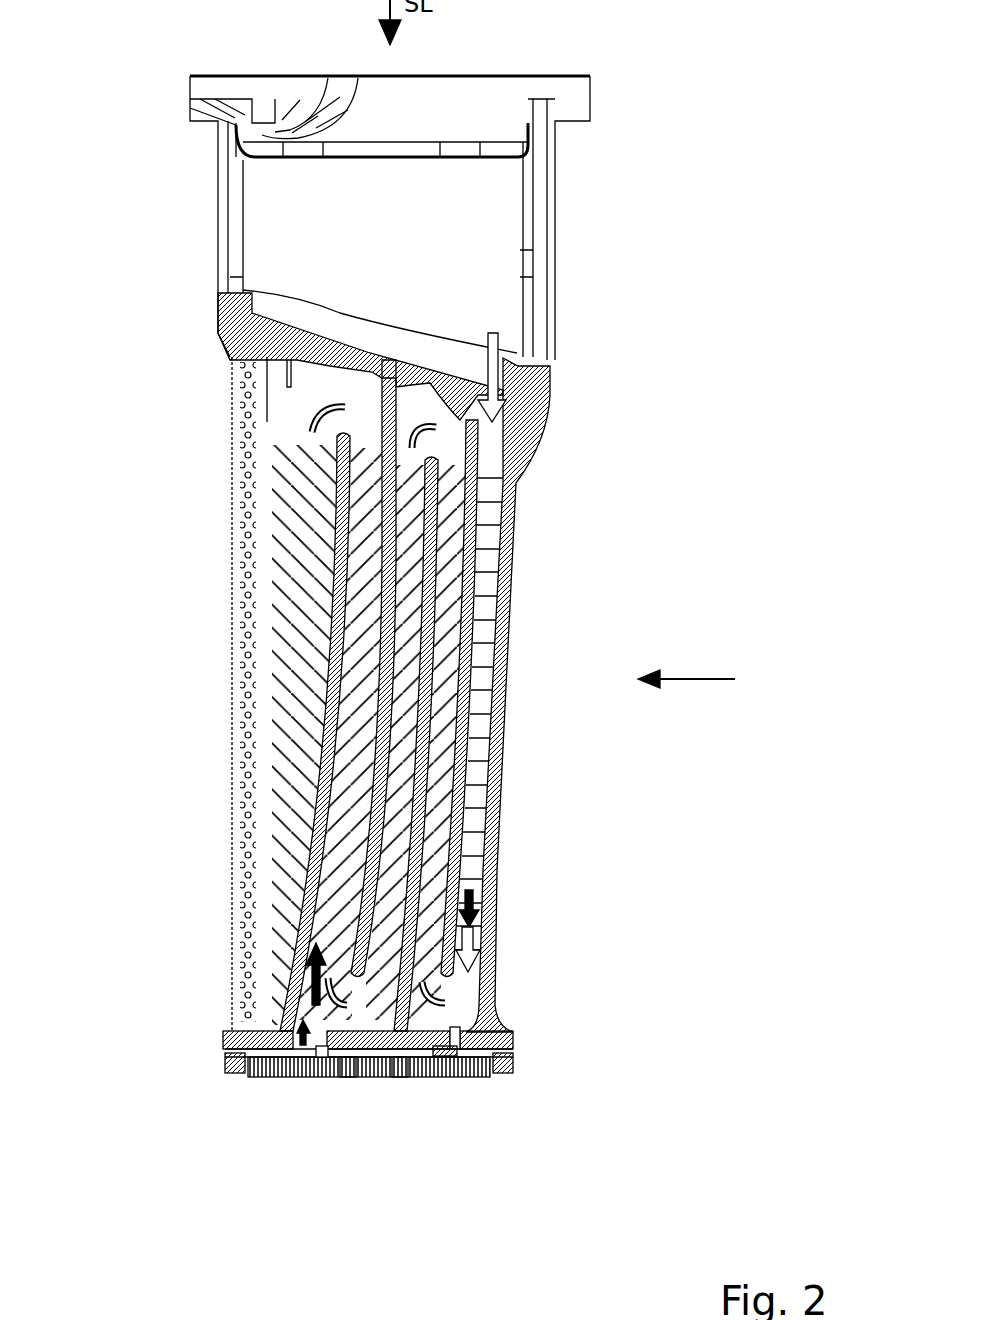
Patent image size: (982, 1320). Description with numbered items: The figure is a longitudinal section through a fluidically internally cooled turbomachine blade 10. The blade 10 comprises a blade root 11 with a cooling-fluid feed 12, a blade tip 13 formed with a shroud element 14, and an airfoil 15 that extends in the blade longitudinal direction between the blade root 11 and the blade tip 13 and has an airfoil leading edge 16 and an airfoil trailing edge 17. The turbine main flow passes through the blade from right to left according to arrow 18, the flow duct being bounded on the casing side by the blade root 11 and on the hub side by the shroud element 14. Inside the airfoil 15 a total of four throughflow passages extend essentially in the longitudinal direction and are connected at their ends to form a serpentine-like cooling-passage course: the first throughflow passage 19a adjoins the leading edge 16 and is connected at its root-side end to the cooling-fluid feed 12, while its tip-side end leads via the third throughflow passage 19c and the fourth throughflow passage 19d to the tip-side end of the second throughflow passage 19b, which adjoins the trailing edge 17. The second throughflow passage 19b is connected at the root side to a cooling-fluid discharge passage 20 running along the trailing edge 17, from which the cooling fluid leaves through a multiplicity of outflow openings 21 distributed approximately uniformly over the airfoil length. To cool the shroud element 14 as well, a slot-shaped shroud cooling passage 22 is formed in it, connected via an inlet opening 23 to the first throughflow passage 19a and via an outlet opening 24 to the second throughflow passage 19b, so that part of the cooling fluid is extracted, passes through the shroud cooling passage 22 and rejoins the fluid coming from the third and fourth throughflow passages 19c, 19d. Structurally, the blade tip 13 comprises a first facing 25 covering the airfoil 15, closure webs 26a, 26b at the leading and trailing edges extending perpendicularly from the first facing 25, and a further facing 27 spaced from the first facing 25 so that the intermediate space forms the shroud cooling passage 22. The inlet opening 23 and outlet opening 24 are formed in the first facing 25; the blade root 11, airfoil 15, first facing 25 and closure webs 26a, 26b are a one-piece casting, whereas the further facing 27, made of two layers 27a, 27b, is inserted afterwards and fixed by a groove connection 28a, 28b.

The turbomachine blade 10 is at (106, 113).
The blade root 11 is at (742, 362).
The cooling-fluid feed 12 is at (492, 248).
The blade tip 13 is at (732, 997).
The shroud element 14 is at (375, 1028).
The airfoil 15 is at (738, 987).
The airfoil leading edge 16 is at (507, 693).
The airfoil trailing edge 17 is at (248, 795).
The arrow 18 is at (686, 666).
The first throughflow passage 19a is at (490, 538).
The second throughflow passage 19b is at (350, 678).
The third throughflow passage 19c is at (440, 763).
The fourth throughflow passage 19d is at (397, 750).
The cooling-fluid discharge passage 20 is at (243, 460).
The outflow openings 21 is at (247, 600).
The shroud cooling passage 22 is at (287, 1077).
The inlet opening 23 is at (463, 1077).
The outlet opening 24 is at (307, 1078).
The first facing 25 is at (293, 967).
The closure web 26a is at (513, 1073).
The closure web 26b is at (225, 1063).
The further facing 27 is at (368, 1077).
The layer 27a is at (400, 1077).
The layer 27b is at (347, 1077).
The groove connection 28a is at (510, 1050).
The groove connection 28b is at (225, 1050).